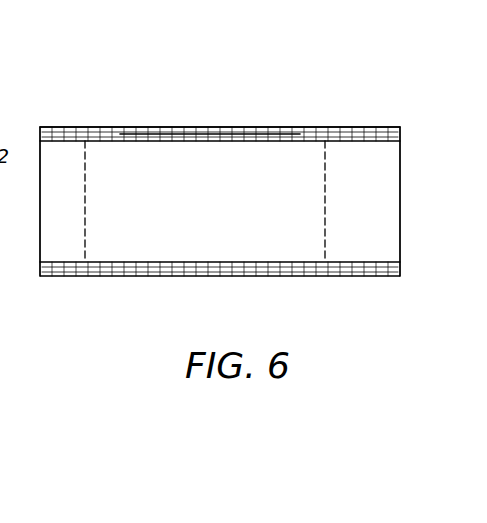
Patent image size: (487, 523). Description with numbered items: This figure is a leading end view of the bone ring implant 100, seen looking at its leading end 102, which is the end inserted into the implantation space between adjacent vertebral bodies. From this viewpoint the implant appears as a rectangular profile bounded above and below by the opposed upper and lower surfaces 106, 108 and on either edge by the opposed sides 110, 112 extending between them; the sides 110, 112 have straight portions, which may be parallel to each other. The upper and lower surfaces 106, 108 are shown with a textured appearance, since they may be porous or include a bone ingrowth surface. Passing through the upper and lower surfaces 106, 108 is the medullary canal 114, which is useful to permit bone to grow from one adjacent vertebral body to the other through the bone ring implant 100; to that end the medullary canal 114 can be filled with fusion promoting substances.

The bone ring implant 100 is at (262, 96).
The leading end 102 is at (232, 215).
The upper surface 106 is at (335, 130).
The lower surface 108 is at (333, 271).
The side 110 is at (40, 228).
The side 112 is at (402, 203).
The medullary canal 114 is at (195, 128).